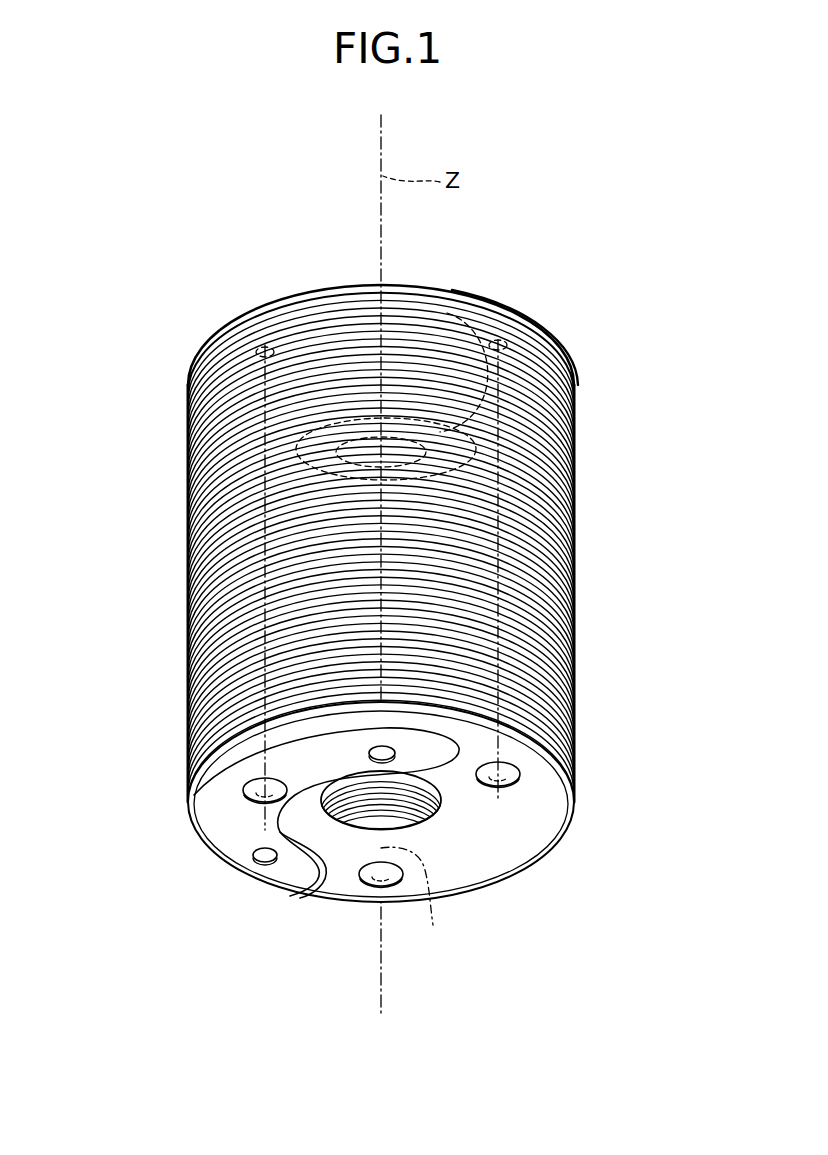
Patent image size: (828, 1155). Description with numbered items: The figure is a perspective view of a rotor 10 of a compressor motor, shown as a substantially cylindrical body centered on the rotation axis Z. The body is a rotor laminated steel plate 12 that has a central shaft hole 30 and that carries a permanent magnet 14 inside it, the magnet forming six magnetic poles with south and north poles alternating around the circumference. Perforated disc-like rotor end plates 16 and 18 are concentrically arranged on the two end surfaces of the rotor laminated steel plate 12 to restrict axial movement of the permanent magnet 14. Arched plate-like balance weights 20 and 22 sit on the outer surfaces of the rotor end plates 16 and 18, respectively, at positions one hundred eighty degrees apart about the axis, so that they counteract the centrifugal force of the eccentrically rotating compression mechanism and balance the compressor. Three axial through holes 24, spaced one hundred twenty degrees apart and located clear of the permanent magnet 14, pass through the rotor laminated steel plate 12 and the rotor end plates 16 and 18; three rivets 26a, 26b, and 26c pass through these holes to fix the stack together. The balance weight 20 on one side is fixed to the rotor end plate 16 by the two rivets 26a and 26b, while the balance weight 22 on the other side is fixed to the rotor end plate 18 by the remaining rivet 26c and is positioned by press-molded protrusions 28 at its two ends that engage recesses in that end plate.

The rotor 10 is at (406, 467).
The rotor laminated steel plate 12 is at (454, 550).
The permanent magnet 14 is at (381, 550).
The rotor end plate 16 is at (195, 355).
The rotor end plate 18 is at (195, 806).
The balance weight 20 is at (515, 310).
The balance weight 22 is at (236, 866).
The axial through holes 24 is at (262, 356).
The rivet 26a is at (498, 611).
The rivet 26b is at (422, 900).
The rivet 26c is at (265, 607).
The protrusions 28 is at (266, 864).
The shaft hole 30 is at (358, 824).